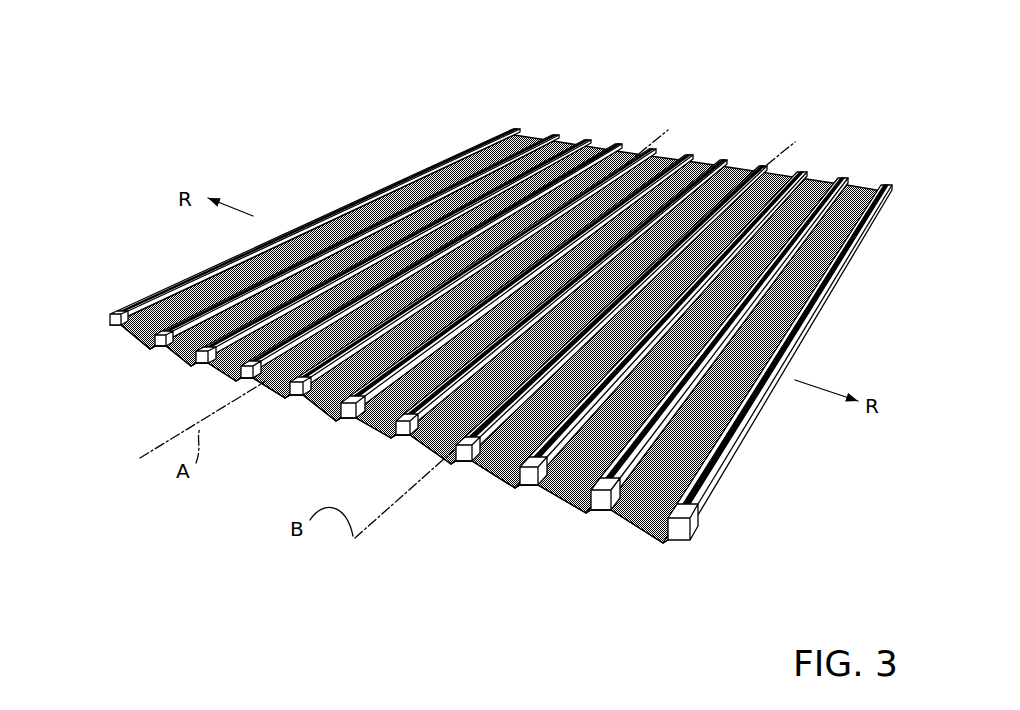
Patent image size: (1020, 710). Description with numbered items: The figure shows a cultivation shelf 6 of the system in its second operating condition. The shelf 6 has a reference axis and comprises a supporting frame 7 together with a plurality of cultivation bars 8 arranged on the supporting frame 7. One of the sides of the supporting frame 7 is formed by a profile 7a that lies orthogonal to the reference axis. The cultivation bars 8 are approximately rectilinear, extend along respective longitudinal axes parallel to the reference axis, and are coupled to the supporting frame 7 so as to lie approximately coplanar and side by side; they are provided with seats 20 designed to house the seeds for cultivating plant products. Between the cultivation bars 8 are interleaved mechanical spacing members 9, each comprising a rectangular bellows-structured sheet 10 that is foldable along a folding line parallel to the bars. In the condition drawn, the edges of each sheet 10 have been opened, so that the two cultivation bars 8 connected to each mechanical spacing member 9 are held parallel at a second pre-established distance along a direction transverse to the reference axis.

The shelf 6 is at (482, 502).
The supporting frame 7 is at (108, 300).
The profile 7a is at (838, 173).
The cultivation bar 8 is at (98, 320).
The mechanical spacing member 9 is at (225, 360).
The rectangular bellows-structured sheet 10 is at (262, 375).
The seat 20 is at (677, 498).